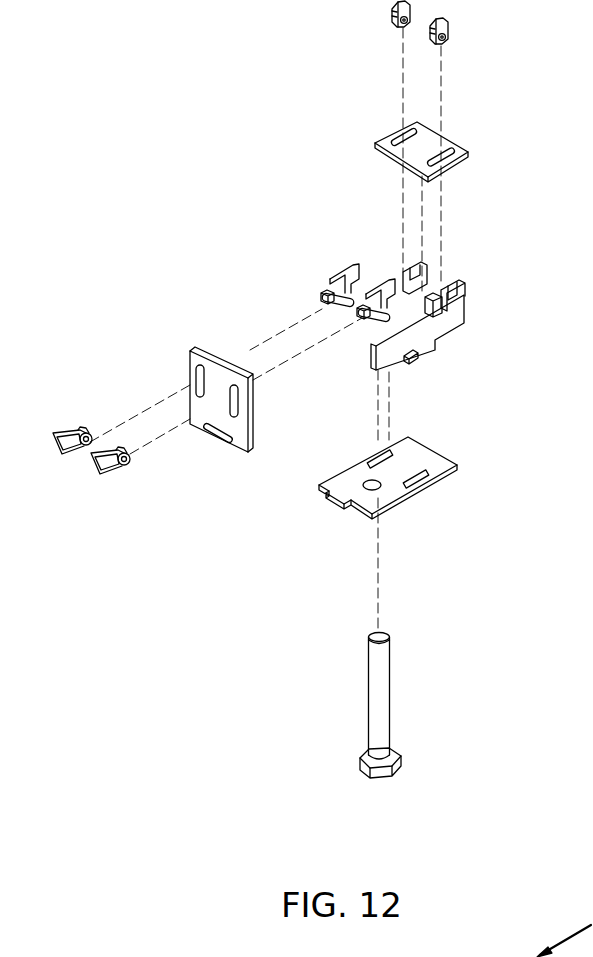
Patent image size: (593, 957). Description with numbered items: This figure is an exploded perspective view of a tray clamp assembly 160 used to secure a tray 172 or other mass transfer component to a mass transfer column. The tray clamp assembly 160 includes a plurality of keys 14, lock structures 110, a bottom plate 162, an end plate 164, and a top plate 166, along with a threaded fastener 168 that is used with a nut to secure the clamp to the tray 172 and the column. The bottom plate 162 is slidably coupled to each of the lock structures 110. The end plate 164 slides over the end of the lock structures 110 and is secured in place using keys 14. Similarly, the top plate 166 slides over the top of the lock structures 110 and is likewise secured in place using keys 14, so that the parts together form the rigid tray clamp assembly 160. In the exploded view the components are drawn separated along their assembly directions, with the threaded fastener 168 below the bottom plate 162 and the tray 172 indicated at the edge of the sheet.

The tray clamp assembly 160 is at (231, 78).
The keys 14 is at (393, 14).
The lock structures 110 is at (337, 276).
The bottom plate 162 is at (437, 447).
The end plate 164 is at (208, 352).
The top plate 166 is at (468, 149).
The threaded fastener 168 is at (390, 667).
The tray 172 is at (591, 925).